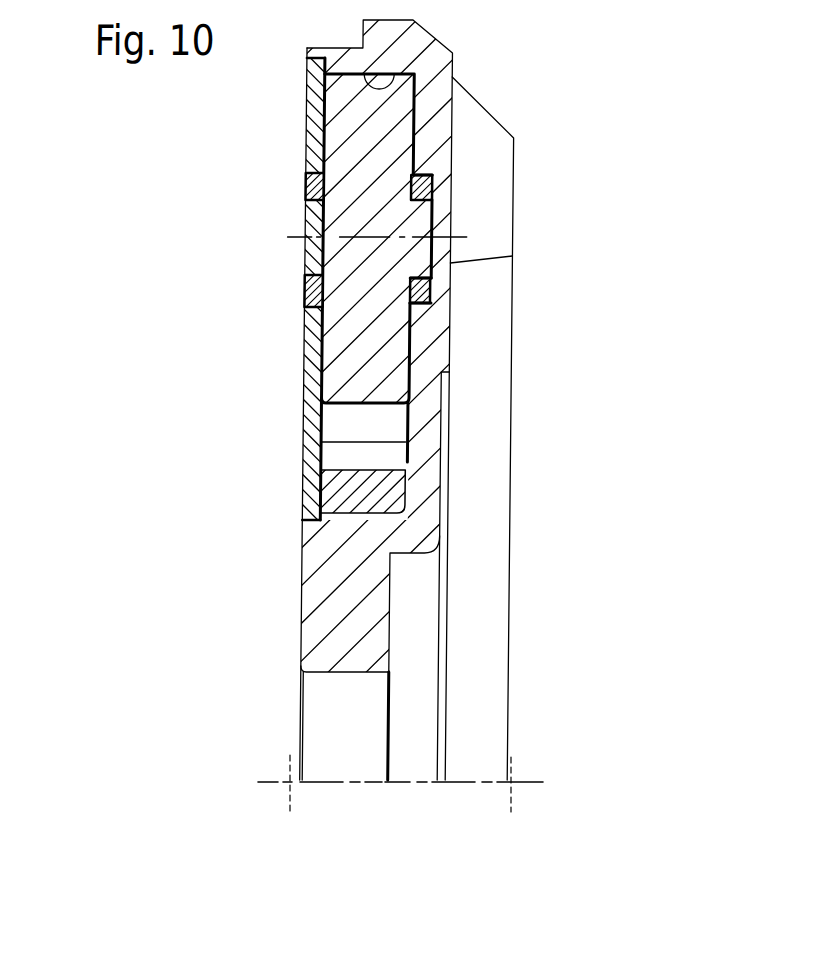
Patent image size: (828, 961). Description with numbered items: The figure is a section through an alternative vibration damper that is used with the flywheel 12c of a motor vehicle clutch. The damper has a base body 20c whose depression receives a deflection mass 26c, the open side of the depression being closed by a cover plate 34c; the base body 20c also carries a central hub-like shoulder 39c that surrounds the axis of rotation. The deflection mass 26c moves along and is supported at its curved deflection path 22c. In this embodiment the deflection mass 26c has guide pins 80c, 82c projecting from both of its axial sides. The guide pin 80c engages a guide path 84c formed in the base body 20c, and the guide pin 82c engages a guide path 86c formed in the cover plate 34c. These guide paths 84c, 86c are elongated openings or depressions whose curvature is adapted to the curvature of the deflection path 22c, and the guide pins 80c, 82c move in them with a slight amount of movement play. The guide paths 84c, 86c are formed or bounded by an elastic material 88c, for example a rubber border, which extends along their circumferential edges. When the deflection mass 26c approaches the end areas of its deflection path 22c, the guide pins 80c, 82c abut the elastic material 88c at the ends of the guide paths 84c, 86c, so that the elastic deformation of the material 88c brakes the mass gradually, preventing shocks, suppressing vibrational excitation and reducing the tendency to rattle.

The flywheel 12c is at (454, 62).
The base body 20c is at (318, 547).
The deflection path 22c is at (396, 72).
The deflection mass 26c is at (387, 371).
The cover plate 34c is at (307, 404).
The hub-like shoulder 39c is at (353, 663).
The guide pin 80c is at (421, 211).
The guide pin 82c is at (315, 245).
The guide path 84c is at (418, 238).
The guide path 86c is at (314, 272).
The elastic material 88c is at (308, 176).